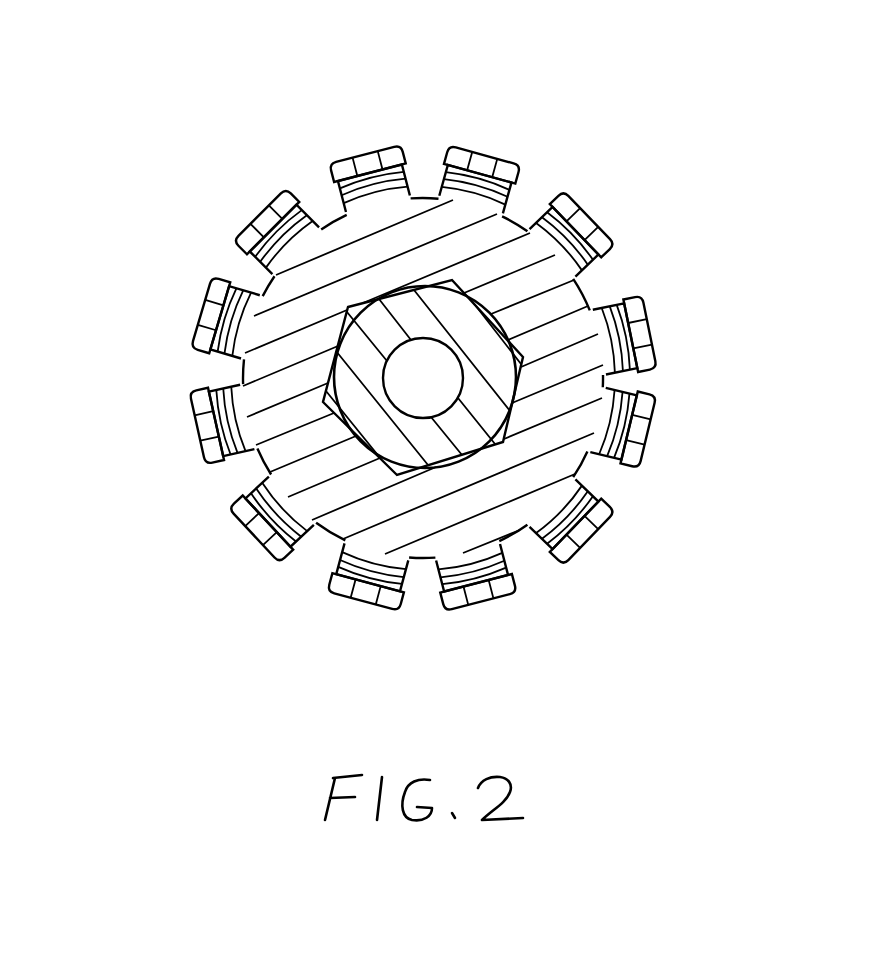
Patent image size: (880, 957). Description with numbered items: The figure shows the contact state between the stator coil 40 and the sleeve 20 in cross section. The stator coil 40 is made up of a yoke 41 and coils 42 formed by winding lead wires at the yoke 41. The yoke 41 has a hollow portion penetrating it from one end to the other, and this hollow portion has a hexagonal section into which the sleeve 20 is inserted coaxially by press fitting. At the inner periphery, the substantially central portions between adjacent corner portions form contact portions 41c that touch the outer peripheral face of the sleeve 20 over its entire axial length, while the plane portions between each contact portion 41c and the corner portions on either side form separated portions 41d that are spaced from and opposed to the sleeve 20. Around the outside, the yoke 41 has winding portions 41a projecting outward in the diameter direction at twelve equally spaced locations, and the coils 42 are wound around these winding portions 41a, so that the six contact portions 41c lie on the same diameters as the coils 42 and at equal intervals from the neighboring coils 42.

The stator coil 40 is at (176, 544).
The yoke 41 is at (500, 237).
The winding portions 41a is at (373, 167).
The coils 42 is at (457, 170).
The separated portions 41d is at (525, 352).
The contact portions 41c is at (520, 408).
The sleeve 20 is at (414, 455).